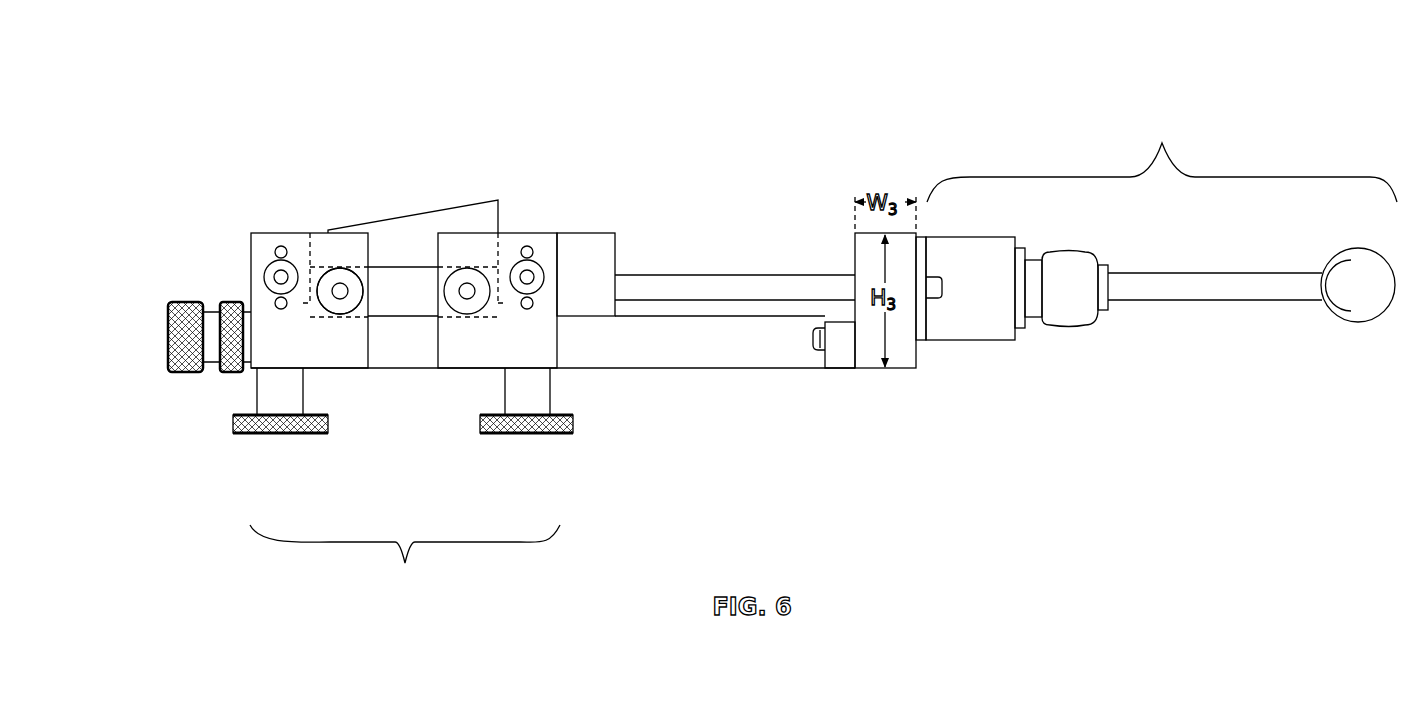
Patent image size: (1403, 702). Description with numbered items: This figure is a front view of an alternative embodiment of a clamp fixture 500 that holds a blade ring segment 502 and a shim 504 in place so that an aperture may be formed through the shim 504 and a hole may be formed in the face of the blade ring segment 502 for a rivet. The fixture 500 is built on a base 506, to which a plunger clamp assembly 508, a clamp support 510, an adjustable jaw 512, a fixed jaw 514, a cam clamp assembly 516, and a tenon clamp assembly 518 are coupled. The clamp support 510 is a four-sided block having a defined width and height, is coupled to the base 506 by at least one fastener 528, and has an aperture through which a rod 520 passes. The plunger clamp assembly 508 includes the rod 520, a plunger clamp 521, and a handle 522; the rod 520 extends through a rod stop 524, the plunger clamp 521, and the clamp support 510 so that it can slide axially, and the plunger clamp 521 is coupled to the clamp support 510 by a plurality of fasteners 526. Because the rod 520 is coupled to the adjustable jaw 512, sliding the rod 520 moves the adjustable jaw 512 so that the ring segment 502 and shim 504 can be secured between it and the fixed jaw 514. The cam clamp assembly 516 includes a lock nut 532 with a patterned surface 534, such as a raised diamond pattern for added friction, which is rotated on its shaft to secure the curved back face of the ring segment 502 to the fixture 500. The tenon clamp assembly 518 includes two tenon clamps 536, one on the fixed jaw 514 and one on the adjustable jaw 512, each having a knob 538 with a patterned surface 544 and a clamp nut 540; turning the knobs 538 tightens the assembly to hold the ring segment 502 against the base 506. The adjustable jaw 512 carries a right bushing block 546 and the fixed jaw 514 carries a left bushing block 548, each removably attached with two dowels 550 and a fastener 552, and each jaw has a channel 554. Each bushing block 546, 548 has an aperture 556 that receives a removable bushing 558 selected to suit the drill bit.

The clamp fixture 500 is at (218, 70).
The blade ring segment 502 is at (440, 232).
The shim 504 is at (377, 276).
The base 506 is at (722, 353).
The plunger clamp assembly 508 is at (1162, 159).
The clamp support 510 is at (893, 350).
The adjustable jaw 512 is at (605, 240).
The fixed jaw 514 is at (265, 233).
The cam clamp assembly 516 is at (162, 367).
The tenon clamp assembly 518 is at (405, 561).
The rod 520 is at (752, 285).
The plunger clamp 521 is at (1002, 340).
The handle 522 is at (1070, 323).
The rod stop 524 is at (1348, 322).
The fasteners 526 is at (932, 297).
The fastener 528 is at (822, 345).
The lock nut 532 is at (193, 372).
The patterned surface 534 is at (175, 360).
The tenon clamp 536 is at (407, 459).
The knob 538 is at (307, 437).
The clamp nut 540 is at (295, 405).
The patterned surface 544 is at (263, 435).
The right bushing block 546 is at (552, 242).
The left bushing block 548 is at (332, 243).
The dowels 550 is at (277, 251).
The fastener 552 is at (274, 277).
The channel 554 is at (300, 313).
The aperture 556 is at (341, 290).
The bushing 558 is at (322, 280).